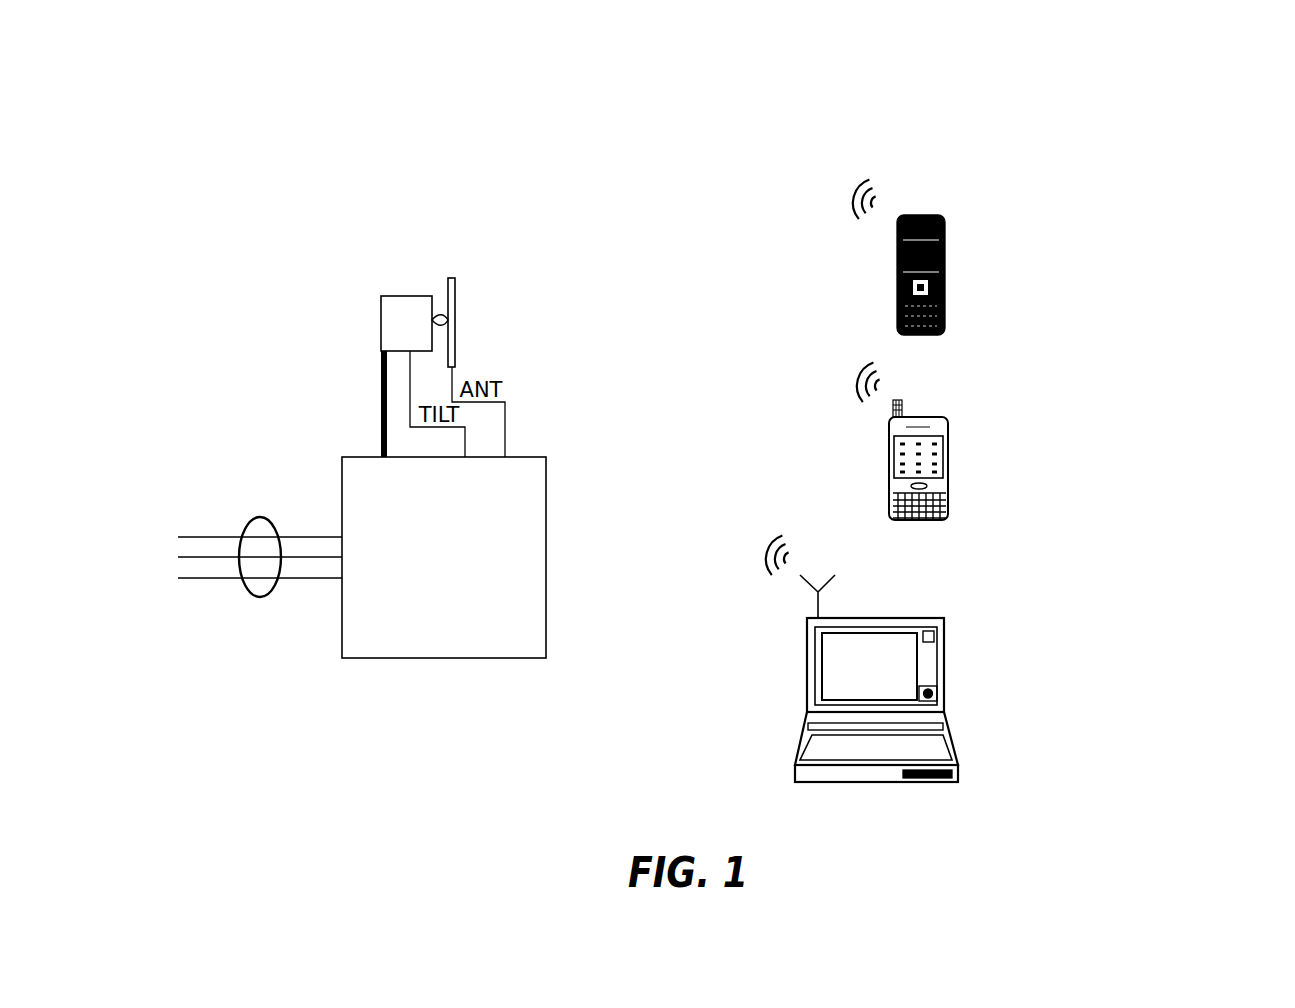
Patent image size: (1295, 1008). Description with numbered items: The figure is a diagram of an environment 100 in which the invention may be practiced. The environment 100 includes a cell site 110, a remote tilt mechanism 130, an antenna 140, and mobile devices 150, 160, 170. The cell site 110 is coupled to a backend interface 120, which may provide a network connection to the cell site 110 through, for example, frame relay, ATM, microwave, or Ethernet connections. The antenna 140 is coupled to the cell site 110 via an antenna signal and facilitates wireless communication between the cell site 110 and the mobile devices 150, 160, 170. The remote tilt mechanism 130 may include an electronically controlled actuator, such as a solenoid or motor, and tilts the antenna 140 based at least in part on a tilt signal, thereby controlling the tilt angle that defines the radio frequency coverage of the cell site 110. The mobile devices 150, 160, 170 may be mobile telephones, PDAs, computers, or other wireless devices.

The environment 100 is at (1143, 149).
The cell site 110 is at (535, 457).
The backend interface 120 is at (262, 517).
The remote tilt mechanism 130 is at (410, 296).
The antenna 140 is at (452, 278).
The mobile device 150 is at (937, 215).
The mobile device 160 is at (947, 417).
The mobile device 170 is at (937, 618).